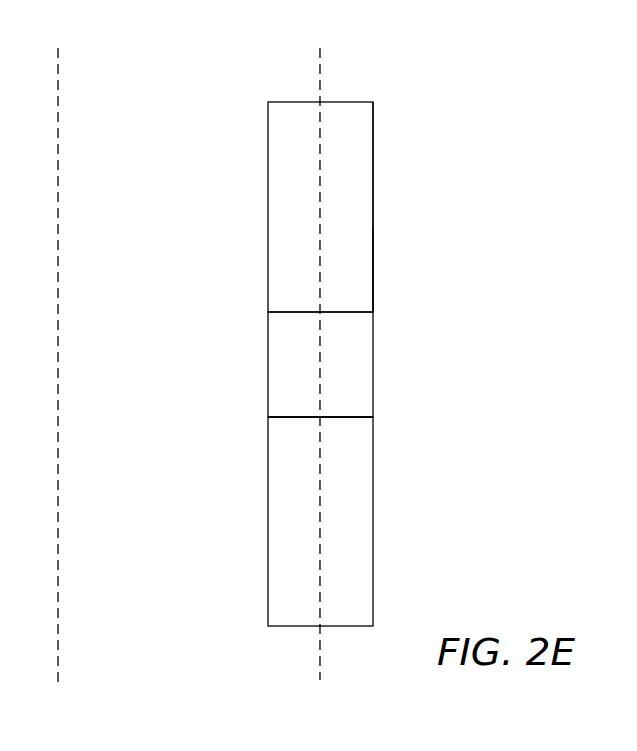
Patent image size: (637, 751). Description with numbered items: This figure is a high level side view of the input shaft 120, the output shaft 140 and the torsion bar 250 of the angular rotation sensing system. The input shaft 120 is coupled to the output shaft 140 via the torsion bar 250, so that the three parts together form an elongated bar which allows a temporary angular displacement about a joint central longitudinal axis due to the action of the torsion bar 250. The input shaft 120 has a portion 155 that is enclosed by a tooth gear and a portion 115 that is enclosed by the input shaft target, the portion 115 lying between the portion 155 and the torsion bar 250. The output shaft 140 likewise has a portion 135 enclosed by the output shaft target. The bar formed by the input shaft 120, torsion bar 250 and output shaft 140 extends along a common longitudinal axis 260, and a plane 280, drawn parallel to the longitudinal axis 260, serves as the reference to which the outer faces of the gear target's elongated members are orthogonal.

The input shaft 120 is at (357, 181).
The portion of input shaft 155 is at (374, 232).
The portion of input shaft 115 is at (374, 286).
The torsion bar 250 is at (347, 380).
The portion of output shaft 135 is at (347, 443).
The output shaft 140 is at (347, 510).
The common longitudinal axis 260 is at (320, 206).
The plane 280 is at (58, 286).